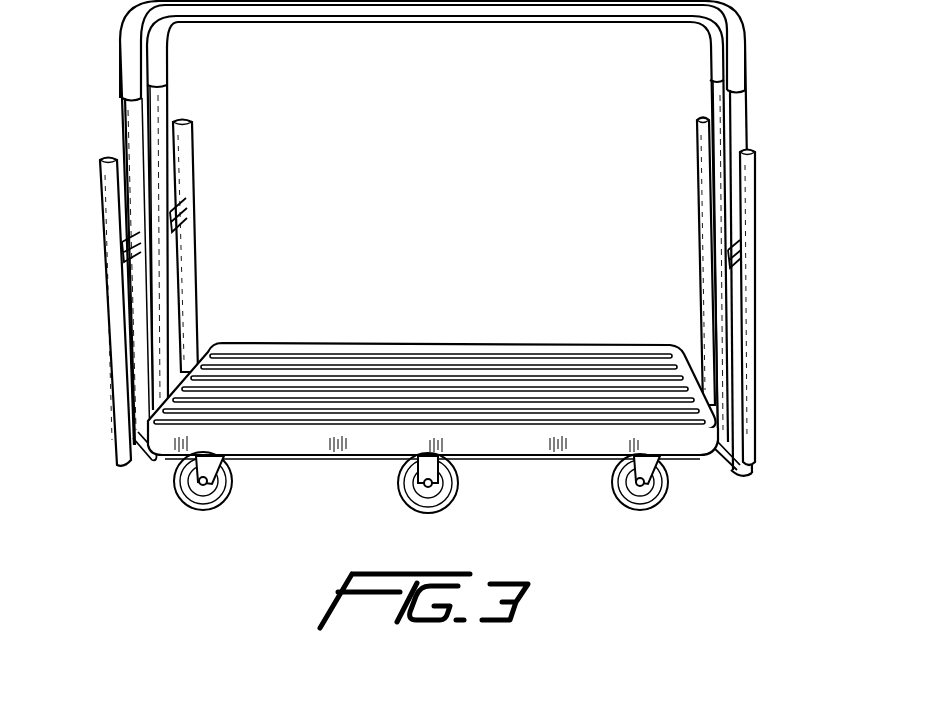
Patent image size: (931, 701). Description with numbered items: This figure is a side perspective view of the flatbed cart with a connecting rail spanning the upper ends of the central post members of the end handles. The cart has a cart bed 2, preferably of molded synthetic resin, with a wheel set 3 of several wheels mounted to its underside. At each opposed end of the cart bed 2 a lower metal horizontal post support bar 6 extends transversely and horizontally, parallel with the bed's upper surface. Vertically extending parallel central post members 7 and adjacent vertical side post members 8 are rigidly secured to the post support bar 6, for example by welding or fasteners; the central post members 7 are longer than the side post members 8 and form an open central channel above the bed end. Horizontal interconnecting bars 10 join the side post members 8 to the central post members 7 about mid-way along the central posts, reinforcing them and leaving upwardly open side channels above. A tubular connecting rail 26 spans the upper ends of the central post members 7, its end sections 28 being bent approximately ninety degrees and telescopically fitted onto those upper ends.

The cart bed 2 is at (390, 362).
The wheel set 3 is at (673, 483).
The lower horizontal post support bar 6 is at (147, 457).
The central post member 7 is at (125, 121).
The side post member 8 is at (100, 195).
The horizontal interconnecting bar 10 is at (140, 243).
The connecting rail 26 is at (375, 20).
The end section 28 is at (708, 58).